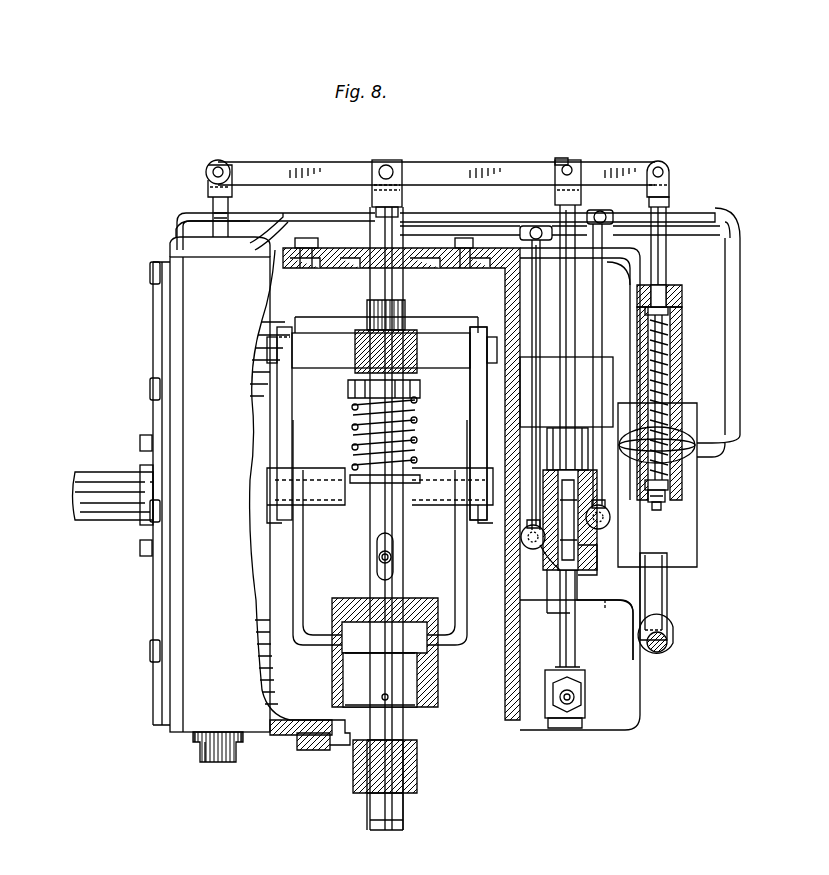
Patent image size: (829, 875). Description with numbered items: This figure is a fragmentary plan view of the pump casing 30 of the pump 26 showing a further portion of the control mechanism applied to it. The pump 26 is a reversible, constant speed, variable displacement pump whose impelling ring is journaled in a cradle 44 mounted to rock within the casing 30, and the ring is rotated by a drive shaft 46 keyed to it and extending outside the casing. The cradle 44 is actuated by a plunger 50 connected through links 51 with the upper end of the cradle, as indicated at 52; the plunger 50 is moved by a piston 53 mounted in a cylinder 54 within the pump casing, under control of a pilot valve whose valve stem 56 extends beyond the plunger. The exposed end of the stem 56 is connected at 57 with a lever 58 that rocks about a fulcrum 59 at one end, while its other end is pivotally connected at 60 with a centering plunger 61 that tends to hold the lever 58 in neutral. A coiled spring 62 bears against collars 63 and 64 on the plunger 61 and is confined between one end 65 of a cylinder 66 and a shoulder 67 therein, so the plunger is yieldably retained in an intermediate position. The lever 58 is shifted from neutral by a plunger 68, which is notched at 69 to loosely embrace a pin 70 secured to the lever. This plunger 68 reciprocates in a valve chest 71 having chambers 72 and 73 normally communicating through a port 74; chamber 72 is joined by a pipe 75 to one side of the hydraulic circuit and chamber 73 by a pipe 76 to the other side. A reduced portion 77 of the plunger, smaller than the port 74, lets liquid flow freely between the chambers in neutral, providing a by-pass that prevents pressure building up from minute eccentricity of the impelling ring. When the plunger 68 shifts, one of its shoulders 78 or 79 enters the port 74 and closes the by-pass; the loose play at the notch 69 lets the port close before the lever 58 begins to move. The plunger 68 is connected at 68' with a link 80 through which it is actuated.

The pump 26 is at (200, 318).
The casing 30 is at (490, 245).
The cradle 44 is at (258, 640).
The drive shaft 46 is at (115, 518).
The plunger 50 is at (404, 528).
The links 51 is at (282, 433).
The connection of links to cradle 52 is at (313, 500).
The piston 53 is at (350, 693).
The cylinder 54 is at (332, 616).
The valve stem 56 is at (375, 210).
The connection of stem to lever 57 is at (387, 160).
The lever 58 is at (305, 162).
The fulcrum 59 is at (218, 168).
The pivotal connection to centering plunger 60 is at (658, 162).
The centering plunger 61 is at (672, 262).
The coiled spring 62 is at (662, 356).
The collar 63 is at (670, 490).
The collar 64 is at (668, 320).
The end of cylinder 65 is at (672, 303).
The cylinder 66 is at (680, 392).
The shoulder 67 is at (682, 500).
The plunger 68 is at (587, 384).
The connection of plunger to link 68' is at (597, 728).
The slot or notch 69 is at (560, 168).
The pin 70 is at (572, 165).
The valve chest 71 is at (606, 580).
The chamber 72 is at (590, 500).
The chamber 73 is at (542, 563).
The port 74 is at (525, 535).
The pipe 75 is at (603, 330).
The pipe 76 is at (528, 291).
The reduced portion 77 is at (585, 546).
The shoulder 78 is at (567, 449).
The shoulder 79 is at (580, 562).
The link 80 is at (583, 683).